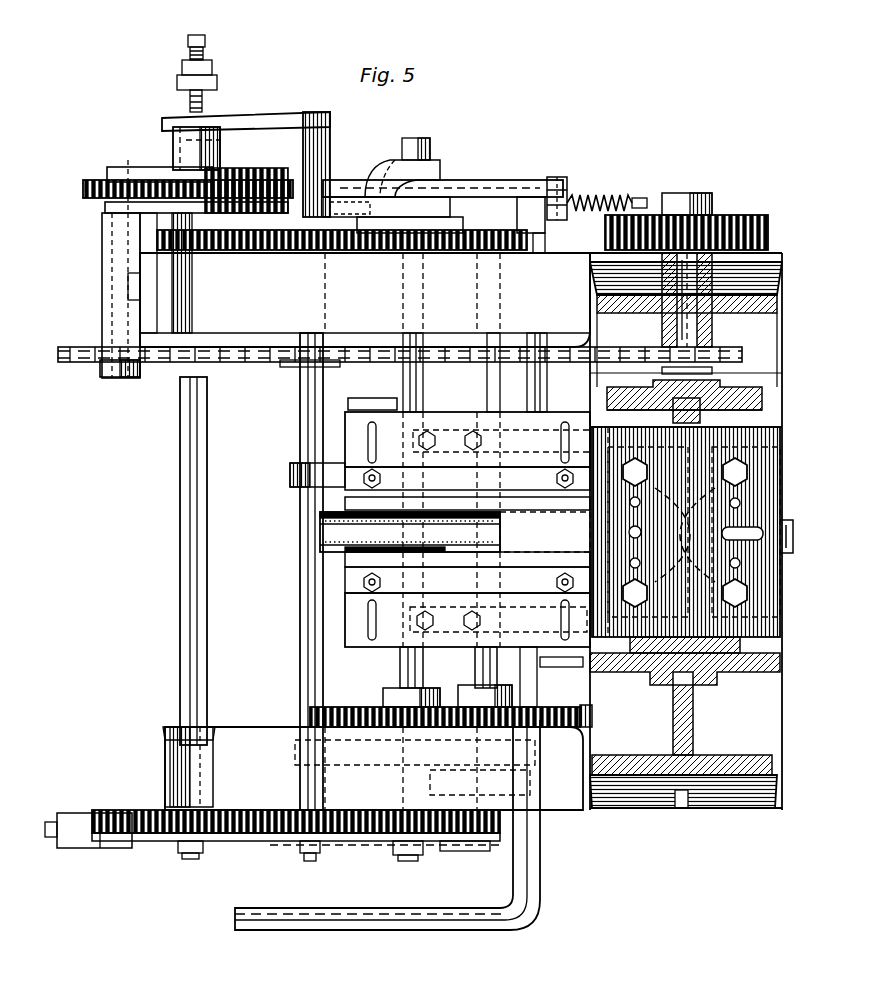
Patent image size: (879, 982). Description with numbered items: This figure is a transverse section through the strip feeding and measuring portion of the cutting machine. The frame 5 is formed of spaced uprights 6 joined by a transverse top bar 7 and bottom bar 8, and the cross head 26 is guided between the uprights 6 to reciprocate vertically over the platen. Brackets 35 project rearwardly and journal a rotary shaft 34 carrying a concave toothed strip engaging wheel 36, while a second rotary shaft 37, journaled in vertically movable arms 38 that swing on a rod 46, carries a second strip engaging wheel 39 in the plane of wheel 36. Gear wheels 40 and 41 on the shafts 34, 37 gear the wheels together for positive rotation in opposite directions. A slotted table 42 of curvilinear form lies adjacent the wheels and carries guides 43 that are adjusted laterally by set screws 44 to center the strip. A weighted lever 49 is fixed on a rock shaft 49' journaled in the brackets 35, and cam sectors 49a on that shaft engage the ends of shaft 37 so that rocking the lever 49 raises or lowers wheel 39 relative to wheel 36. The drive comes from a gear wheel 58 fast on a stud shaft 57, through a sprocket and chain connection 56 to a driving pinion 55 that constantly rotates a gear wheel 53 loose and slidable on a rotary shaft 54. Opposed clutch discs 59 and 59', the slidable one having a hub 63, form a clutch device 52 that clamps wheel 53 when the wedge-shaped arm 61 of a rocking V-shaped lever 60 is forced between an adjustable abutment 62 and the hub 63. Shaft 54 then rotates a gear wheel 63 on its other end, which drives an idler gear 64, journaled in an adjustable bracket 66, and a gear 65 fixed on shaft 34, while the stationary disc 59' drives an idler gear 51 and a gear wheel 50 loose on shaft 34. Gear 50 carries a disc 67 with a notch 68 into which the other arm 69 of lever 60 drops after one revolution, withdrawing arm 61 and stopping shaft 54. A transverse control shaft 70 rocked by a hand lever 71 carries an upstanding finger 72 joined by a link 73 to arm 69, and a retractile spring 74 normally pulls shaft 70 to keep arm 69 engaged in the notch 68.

The adjustable abutment 62 is at (208, 102).
The wedge-shaped arm 61 is at (258, 112).
The rocking V-shaped lever 60 is at (318, 125).
The slidable clutch disc 59 is at (131, 161).
The clutch device 52 is at (135, 170).
The hub of slidable disc 63 is at (176, 154).
The gear wheel 53 is at (242, 185).
The driving pinion 55 is at (83, 188).
The stationary clutch disc 59' is at (165, 209).
The idler gear 51 is at (270, 252).
The arm of rocking lever 69 is at (348, 200).
The link 73 is at (493, 195).
The upstanding finger 72 is at (550, 193).
The retractile spring 74 is at (604, 193).
The disc 67 is at (463, 226).
The notch 68 is at (405, 257).
The gear wheel 50 is at (485, 252).
The gear wheel 58 is at (757, 208).
The uprights 6 is at (740, 770).
The stud shaft 57 is at (712, 325).
The top bar 7 is at (738, 392).
The sprocket and chain connection 56 is at (272, 362).
The brackets 35 is at (242, 740).
The rotary shaft 54 is at (180, 690).
The rod 46 is at (300, 690).
The set screws 44 is at (592, 680).
The vertically movable arms 38 is at (352, 398).
The cam sectors 49a is at (440, 430).
The slotted table 42 is at (345, 445).
The guides 43 is at (345, 502).
The strip engaging wheel 36 is at (455, 532).
The second strip engaging wheel 39 is at (577, 538).
The rotary shaft 34 is at (400, 672).
The second rotary shaft 37 is at (475, 672).
The gear wheel 40 is at (350, 713).
The gear wheel 41 is at (585, 716).
The transverse control shaft 70 is at (585, 716).
The hand lever 71 is at (355, 930).
The cross head 26 is at (752, 672).
The bottom bar 8 is at (626, 745).
The frame 5 is at (740, 806).
The idler gear 64 is at (300, 810).
The weighted lever 49 is at (272, 843).
The adjustable bracket 66 is at (343, 852).
The gear 65 is at (450, 842).
The rock shaft 49' is at (388, 871).